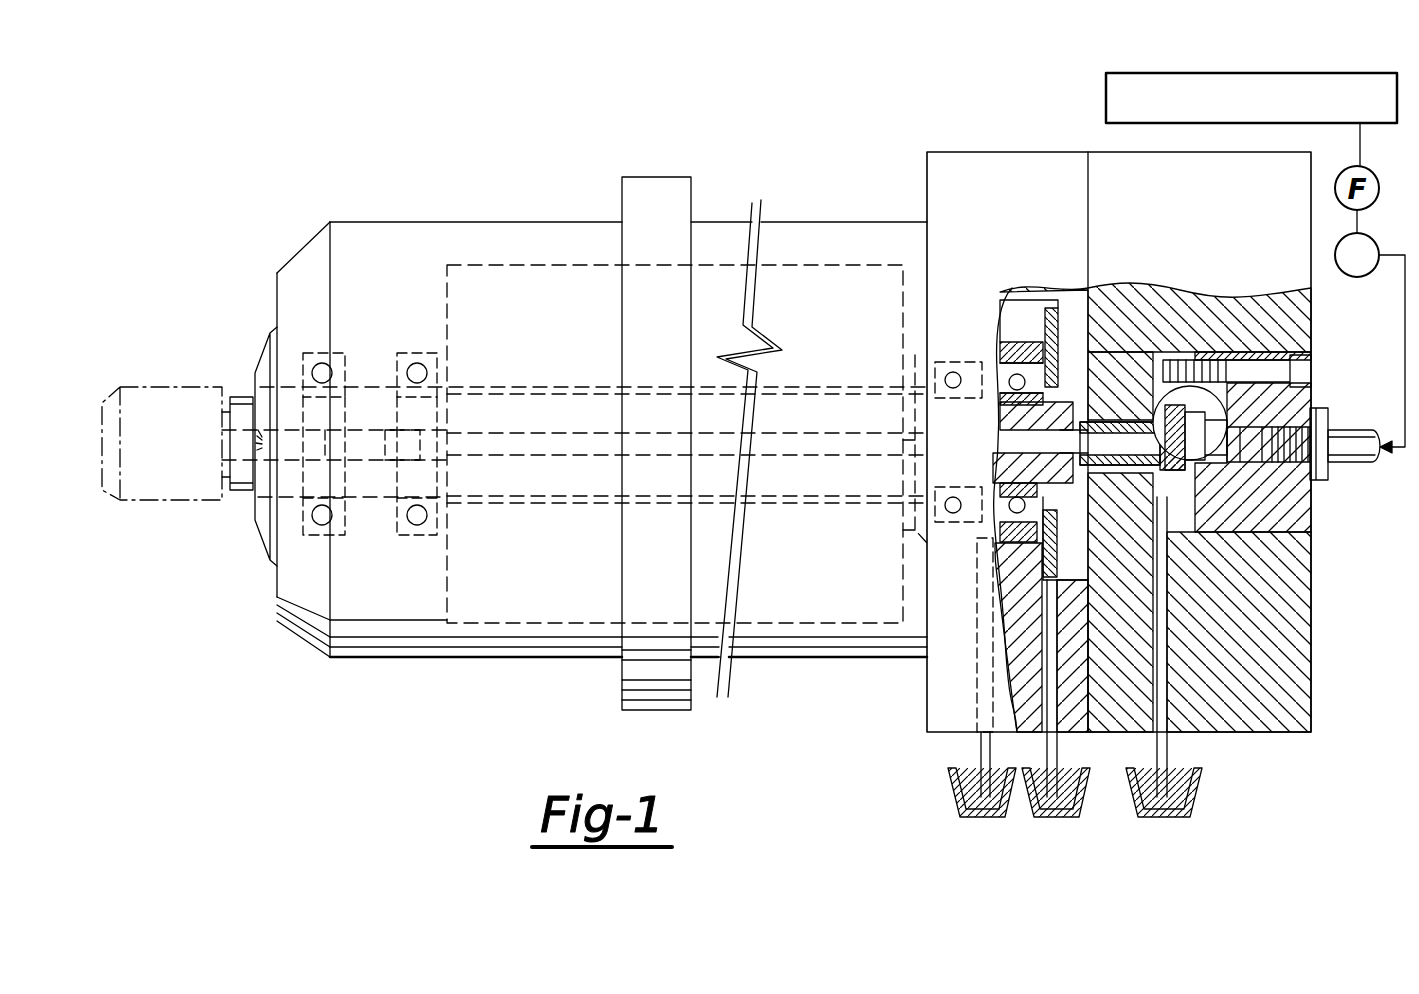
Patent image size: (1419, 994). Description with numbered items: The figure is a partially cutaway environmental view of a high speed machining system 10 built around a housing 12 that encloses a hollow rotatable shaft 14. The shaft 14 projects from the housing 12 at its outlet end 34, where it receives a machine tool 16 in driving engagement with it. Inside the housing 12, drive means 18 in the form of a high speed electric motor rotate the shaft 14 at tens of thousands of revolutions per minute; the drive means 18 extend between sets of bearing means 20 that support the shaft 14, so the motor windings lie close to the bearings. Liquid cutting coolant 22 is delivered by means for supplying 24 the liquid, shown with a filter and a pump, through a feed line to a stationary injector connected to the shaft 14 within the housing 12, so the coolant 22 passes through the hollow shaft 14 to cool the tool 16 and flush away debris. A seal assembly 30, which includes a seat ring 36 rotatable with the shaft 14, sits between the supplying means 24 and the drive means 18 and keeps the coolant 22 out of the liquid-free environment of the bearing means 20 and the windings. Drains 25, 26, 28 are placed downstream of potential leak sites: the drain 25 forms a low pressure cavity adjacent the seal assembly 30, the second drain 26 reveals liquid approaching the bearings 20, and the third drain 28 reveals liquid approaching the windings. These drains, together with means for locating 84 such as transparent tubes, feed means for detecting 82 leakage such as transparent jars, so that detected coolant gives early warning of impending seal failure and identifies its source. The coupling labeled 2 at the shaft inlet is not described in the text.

The rotary coupling 2 is at (1227, 447).
The high speed machining system 10 is at (275, 222).
The housing 12 is at (468, 222).
The hollow rotatable shaft 14 is at (803, 390).
The machine tool 16 is at (102, 475).
The drive means 18 is at (528, 265).
The bearing means 20 is at (417, 362).
The liquid cutting coolant 22 is at (1106, 100).
The means for supplying liquid 24 is at (1357, 278).
The drain 25 is at (1167, 668).
The second drain 26 is at (1060, 757).
The third drain 28 is at (975, 760).
The seal assembly 30 is at (1182, 400).
The outlet end 34 is at (262, 512).
The seat ring 36 is at (1150, 412).
The means for detecting leakage 82 is at (1177, 820).
The means for locating 84 is at (1170, 757).